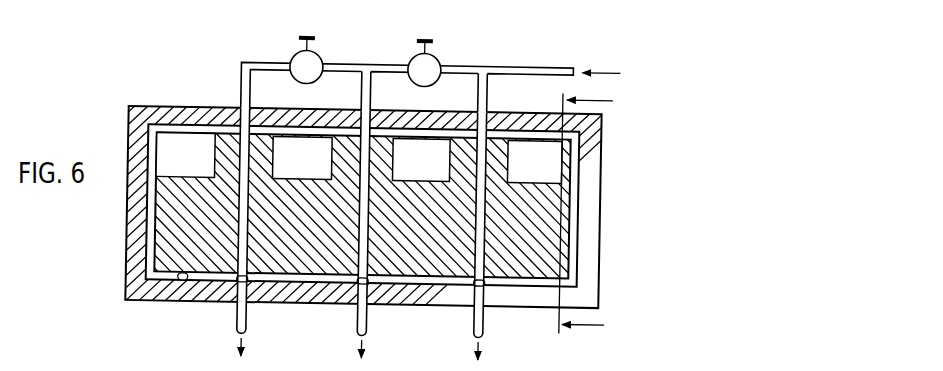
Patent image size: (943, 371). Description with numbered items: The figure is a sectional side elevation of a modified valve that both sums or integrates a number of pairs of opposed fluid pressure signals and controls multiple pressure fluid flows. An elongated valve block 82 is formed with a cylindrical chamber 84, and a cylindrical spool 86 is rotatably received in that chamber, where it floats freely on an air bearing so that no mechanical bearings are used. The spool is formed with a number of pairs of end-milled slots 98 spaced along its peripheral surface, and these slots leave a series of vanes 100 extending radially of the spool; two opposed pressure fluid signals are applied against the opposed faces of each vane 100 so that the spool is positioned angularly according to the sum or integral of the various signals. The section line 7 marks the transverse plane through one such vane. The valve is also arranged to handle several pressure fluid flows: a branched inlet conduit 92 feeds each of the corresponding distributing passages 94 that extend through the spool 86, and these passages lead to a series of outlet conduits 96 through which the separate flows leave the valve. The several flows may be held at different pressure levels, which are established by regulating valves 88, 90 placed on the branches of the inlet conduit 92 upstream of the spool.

The section line 7- 7 is at (593, 216).
The valve block 82 is at (600, 231).
The cylindrical chamber 84 is at (184, 283).
The cylindrical spool 86 is at (572, 211).
The regulating valve 88 is at (412, 78).
The regulating valve 90 is at (294, 78).
The branched inlet conduit 92 is at (239, 94).
The distributing passage 94 is at (248, 233).
The outlet conduit 96 is at (369, 320).
The end-milled slot 98 is at (394, 162).
The vane 100 is at (289, 164).